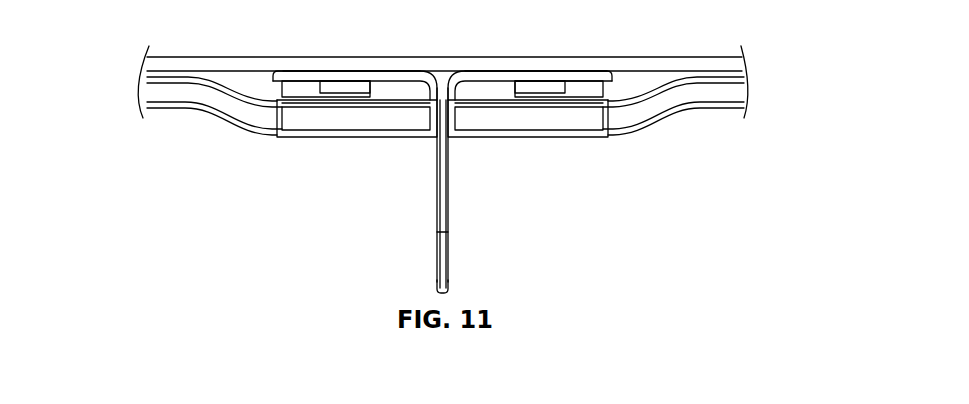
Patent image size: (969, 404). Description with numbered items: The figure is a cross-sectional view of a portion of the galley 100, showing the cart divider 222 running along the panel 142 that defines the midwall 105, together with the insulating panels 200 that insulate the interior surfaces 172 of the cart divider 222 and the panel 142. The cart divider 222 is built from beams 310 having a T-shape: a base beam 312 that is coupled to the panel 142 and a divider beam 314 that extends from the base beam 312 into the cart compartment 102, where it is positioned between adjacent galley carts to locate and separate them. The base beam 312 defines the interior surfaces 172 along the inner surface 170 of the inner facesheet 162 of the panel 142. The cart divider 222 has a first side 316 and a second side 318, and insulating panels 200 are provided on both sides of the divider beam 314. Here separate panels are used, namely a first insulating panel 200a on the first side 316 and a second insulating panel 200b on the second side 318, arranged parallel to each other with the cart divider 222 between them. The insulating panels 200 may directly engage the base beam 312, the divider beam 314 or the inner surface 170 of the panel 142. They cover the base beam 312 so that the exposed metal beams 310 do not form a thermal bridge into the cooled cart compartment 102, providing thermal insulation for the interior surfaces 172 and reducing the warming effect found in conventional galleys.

The galley 100 is at (766, 24).
The cart compartment 102 is at (576, 237).
The midwall 105 is at (677, 63).
The panel 142 is at (227, 65).
The inner facesheet 162 is at (348, 69).
The inner surface 170 is at (355, 72).
The interior surfaces 172 is at (307, 82).
The insulating panels 200 is at (152, 96).
The first insulating panel 200a is at (520, 118).
The second insulating panel 200b is at (317, 117).
The cart divider 222 is at (437, 190).
The beams 310 is at (502, 78).
The base beam 312 is at (397, 78).
The divider beam 314 is at (448, 232).
The first side 316 is at (448, 268).
The second side 318 is at (437, 268).